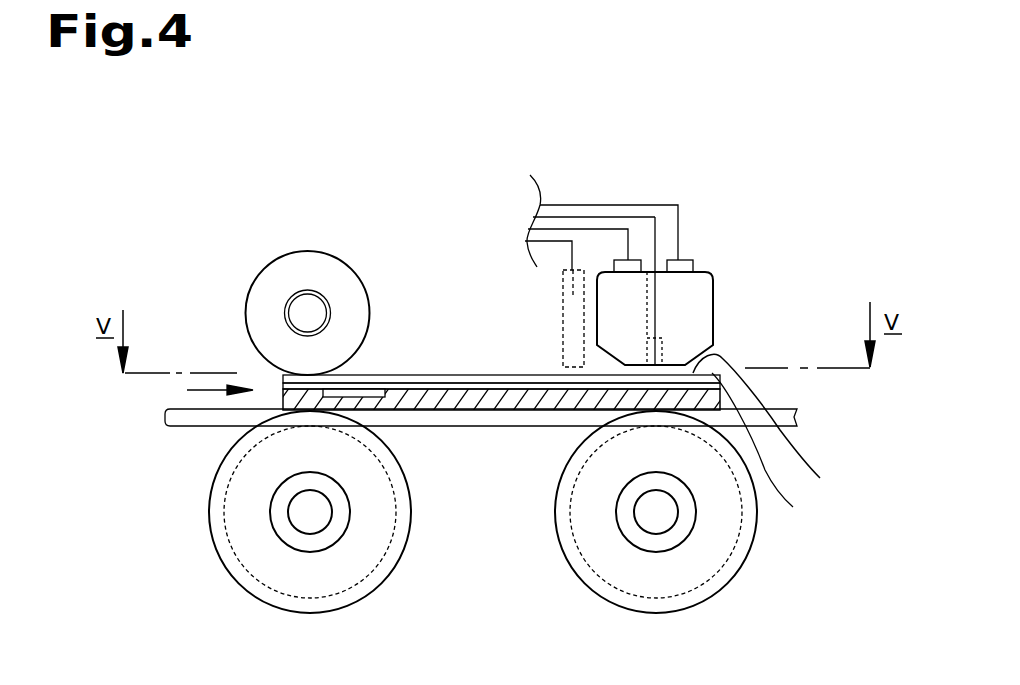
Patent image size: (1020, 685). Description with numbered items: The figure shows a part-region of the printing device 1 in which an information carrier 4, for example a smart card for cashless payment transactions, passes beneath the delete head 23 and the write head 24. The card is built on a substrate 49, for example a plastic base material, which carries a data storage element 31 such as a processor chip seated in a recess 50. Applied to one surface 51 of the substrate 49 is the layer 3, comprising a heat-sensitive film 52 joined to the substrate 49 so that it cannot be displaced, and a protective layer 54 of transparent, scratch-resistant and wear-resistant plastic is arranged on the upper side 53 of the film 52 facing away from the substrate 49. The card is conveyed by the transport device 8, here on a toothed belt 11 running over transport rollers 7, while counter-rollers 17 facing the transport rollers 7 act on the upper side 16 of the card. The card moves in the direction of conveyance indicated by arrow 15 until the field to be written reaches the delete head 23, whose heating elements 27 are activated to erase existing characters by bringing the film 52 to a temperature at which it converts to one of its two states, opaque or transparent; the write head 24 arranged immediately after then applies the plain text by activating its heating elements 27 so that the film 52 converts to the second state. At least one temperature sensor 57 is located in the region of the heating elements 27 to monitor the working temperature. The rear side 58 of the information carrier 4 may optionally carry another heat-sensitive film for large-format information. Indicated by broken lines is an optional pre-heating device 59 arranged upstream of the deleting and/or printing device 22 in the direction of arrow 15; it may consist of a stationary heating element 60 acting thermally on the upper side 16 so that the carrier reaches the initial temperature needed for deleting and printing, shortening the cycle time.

The printing device 1 is at (797, 218).
The layer 3 is at (764, 454).
The information carrier 4 is at (228, 312).
The transport rollers 7 is at (325, 555).
The transport device 8 is at (750, 338).
The toothed belt 11 is at (490, 418).
The arrow 15 is at (203, 389).
The upper side 16 is at (771, 426).
The counter-rollers 17 is at (272, 290).
The deleting and/or printing device 22 is at (699, 238).
The delete head 23 is at (617, 305).
The write head 24 is at (672, 298).
The heating elements 27 is at (628, 366).
The data storage element 31 is at (383, 394).
The substrate 49 is at (423, 398).
The recess 50 is at (357, 396).
The surface 51 is at (430, 388).
The heat-sensitive film 52 is at (296, 388).
The upper side 53 is at (458, 381).
The protective layer 54 is at (492, 380).
The temperature sensor 57 is at (662, 338).
The rear side 58 is at (462, 410).
The pre-heating device 59 is at (553, 261).
The heating element 60 is at (575, 270).